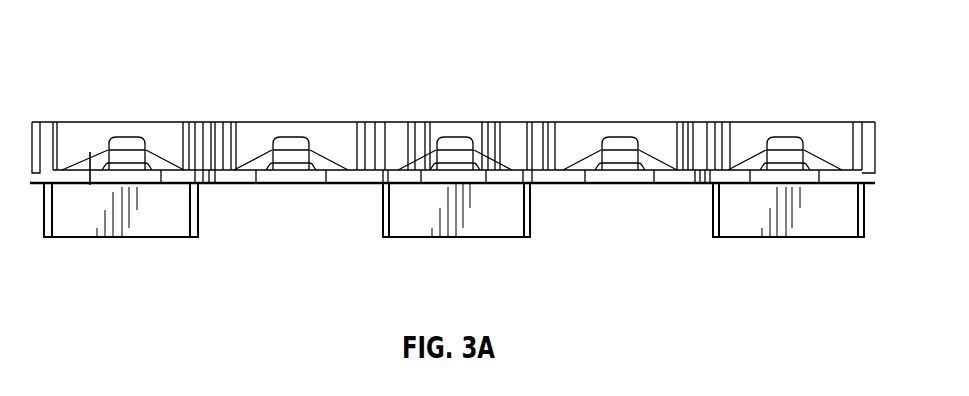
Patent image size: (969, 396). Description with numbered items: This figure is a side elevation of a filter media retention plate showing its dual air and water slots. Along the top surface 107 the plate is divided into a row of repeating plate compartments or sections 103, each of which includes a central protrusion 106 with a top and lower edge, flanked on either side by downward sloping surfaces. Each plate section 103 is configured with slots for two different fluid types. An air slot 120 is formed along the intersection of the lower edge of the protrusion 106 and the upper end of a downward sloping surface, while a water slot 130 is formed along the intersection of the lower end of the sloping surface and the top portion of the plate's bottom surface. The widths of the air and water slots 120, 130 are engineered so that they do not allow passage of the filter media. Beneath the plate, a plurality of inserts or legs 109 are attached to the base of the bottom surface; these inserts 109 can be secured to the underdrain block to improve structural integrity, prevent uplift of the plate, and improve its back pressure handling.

The plate compartment/section 103 is at (673, 111).
The central protrusion 106 is at (131, 137).
The top surface 107 is at (312, 123).
The inserts or legs 109 is at (820, 230).
The air slot 120 is at (112, 138).
The water slot 130 is at (90, 152).